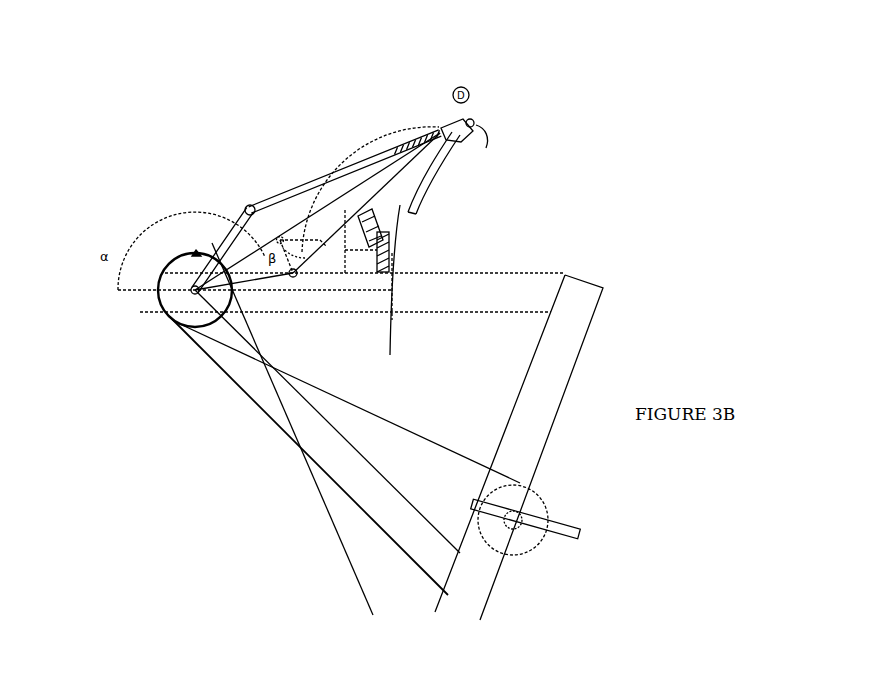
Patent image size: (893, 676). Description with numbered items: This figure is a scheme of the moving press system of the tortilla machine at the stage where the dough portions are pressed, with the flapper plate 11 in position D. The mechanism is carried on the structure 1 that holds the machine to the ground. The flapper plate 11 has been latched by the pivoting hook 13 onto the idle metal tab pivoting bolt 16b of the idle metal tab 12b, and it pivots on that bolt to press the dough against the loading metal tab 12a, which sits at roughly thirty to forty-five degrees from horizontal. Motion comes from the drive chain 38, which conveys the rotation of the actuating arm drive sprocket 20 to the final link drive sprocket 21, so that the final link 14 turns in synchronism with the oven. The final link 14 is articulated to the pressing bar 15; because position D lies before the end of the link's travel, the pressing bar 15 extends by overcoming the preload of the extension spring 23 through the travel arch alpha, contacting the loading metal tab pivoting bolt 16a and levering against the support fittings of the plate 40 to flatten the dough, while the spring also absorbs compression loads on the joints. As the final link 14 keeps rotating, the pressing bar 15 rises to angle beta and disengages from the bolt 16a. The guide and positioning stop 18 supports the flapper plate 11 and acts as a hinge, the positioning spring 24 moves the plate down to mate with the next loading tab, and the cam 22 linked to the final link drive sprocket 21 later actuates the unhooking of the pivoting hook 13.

The structure 1 is at (297, 437).
The flapper plate 11 is at (332, 237).
The loading metal tab 12a is at (423, 180).
The idle metal tab 12b is at (355, 245).
The pivoting hook 13 is at (372, 222).
The final link 14 is at (207, 243).
The pressing bar 15 is at (273, 195).
The loading metal tab pivoting bolt 16a is at (477, 115).
The idle metal tab pivoting bolt 16b is at (415, 228).
The guide and positioning stop 18 is at (390, 289).
The actuating arm drive sprocket 20 is at (460, 523).
The final link drive sprocket 21 is at (150, 313).
The cam 22 is at (180, 260).
The extension spring 23 is at (405, 135).
The positioning spring 24 is at (370, 272).
The drive chain 38 is at (320, 498).
The support fittings of the plate 40 is at (440, 128).